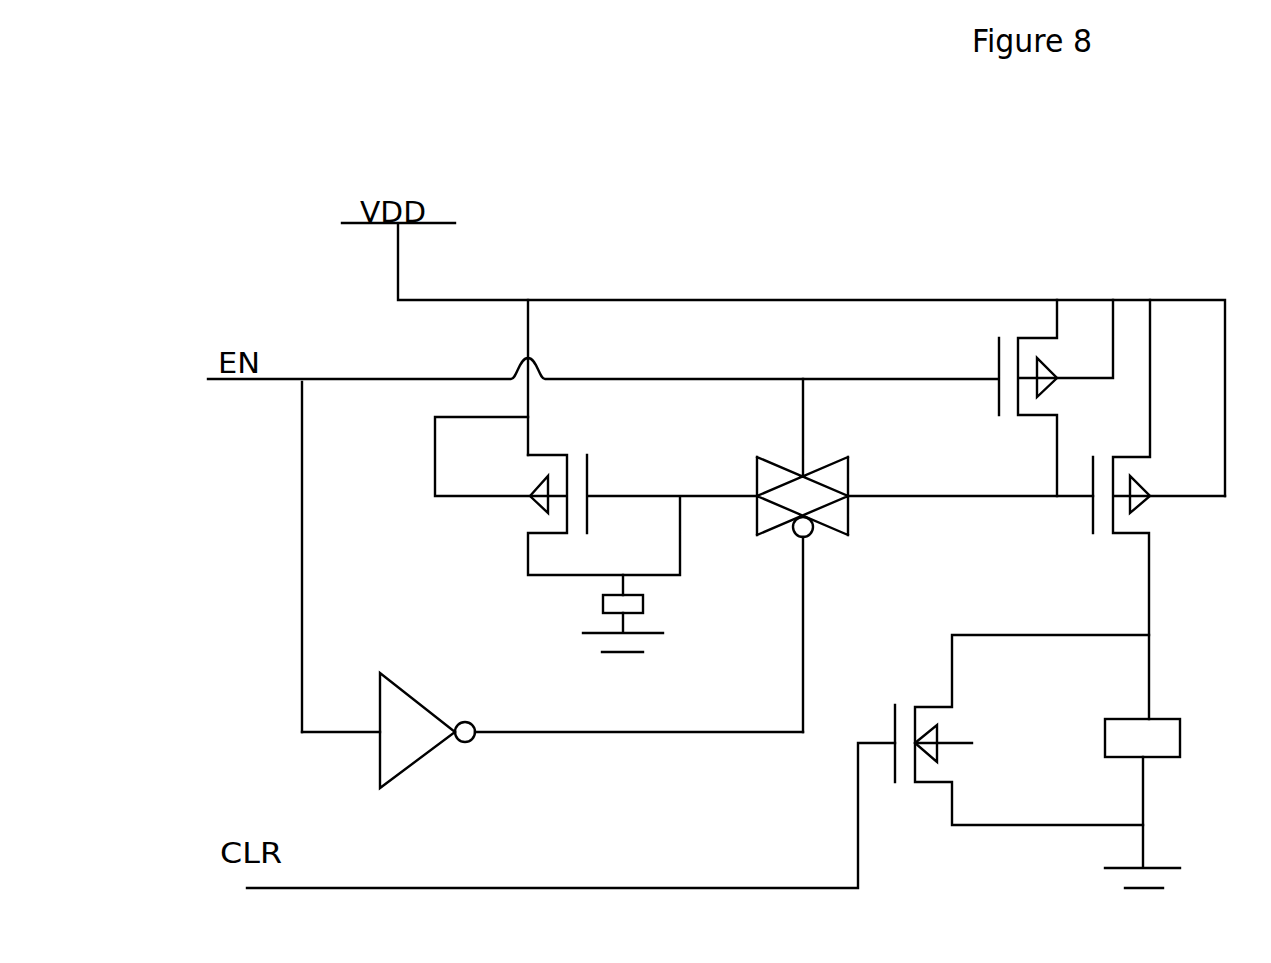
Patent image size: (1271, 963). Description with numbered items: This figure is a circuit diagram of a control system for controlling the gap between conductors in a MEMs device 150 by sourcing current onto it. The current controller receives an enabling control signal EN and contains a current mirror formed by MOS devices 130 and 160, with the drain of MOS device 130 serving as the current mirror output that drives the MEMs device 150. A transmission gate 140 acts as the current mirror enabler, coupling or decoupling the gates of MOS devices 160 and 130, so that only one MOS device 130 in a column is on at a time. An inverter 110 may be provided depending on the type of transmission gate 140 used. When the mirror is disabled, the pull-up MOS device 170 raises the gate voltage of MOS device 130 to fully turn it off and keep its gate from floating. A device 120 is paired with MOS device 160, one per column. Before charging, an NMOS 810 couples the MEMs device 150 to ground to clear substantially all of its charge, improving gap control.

The inverter 110 is at (421, 763).
The device 120 is at (600, 605).
The MOS device 130 is at (1090, 519).
The transmission gate 140 is at (851, 539).
The MEMs device 150 is at (1103, 739).
The MOS device 160 is at (588, 470).
The pull-up MOS device 170 is at (997, 398).
The NMOS 810 is at (919, 799).